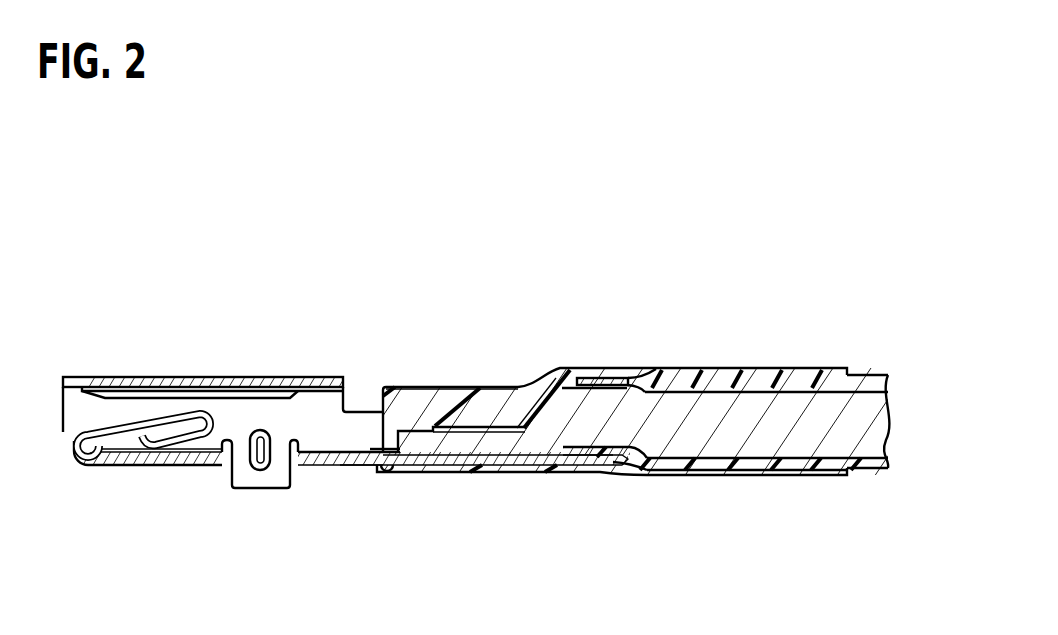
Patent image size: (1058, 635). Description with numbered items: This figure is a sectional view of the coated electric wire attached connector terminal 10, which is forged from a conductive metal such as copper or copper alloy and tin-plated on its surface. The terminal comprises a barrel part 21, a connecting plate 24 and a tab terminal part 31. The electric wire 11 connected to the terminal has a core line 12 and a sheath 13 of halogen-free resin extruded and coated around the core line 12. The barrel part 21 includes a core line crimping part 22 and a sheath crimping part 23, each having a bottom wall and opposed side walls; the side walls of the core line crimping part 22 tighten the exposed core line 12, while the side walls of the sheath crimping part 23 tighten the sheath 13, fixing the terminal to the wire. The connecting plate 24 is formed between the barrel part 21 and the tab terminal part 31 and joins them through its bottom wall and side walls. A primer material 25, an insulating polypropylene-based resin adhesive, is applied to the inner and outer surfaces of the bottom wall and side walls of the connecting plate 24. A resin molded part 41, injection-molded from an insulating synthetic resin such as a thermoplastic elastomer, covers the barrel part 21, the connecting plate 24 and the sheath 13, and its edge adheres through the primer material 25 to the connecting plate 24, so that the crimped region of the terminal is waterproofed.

The coated electric wire attached connector terminal 10 is at (363, 318).
The electric wire 11 is at (877, 362).
The core line 12 is at (541, 436).
The sheath 13 is at (796, 370).
The barrel part 21 is at (542, 340).
The core line crimping part 22 is at (458, 420).
The sheath crimping part 23 is at (600, 382).
The connecting plate 24 is at (365, 463).
The primer material 25 is at (389, 385).
The tab terminal part 31 is at (193, 360).
The resin molded part 41 is at (500, 388).